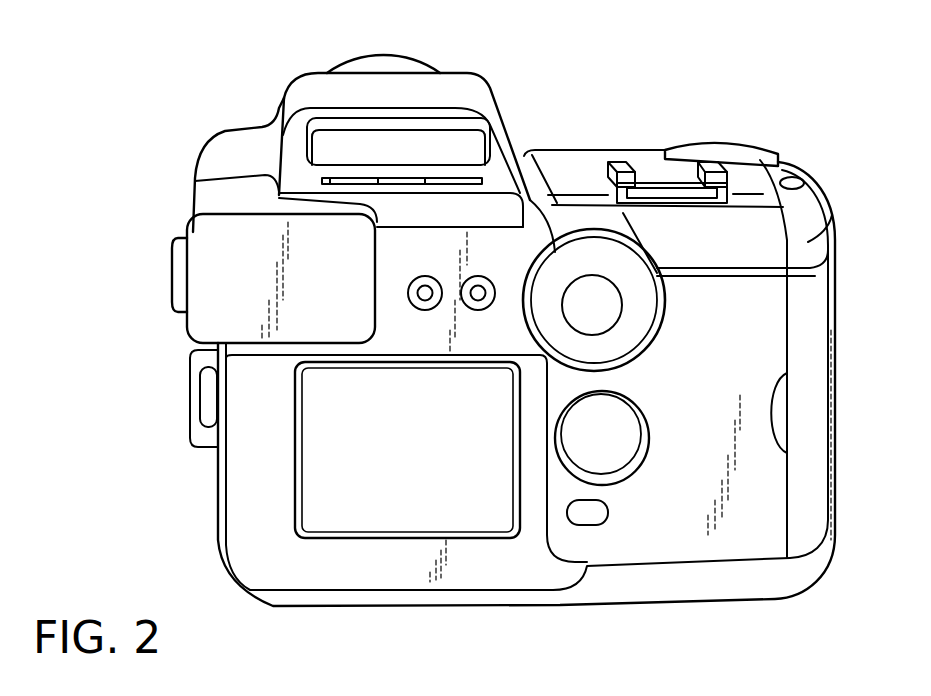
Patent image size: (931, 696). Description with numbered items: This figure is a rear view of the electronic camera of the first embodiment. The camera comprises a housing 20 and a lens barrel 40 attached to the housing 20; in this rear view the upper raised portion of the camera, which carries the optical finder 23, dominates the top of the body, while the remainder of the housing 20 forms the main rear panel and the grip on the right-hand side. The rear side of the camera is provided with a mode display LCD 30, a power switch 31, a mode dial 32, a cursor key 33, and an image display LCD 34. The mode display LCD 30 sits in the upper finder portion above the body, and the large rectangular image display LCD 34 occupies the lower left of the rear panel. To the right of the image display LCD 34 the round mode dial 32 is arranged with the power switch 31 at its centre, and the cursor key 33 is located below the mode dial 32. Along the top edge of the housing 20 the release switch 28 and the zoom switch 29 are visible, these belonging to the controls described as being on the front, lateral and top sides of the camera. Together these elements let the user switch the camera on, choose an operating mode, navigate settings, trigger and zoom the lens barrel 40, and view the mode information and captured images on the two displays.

The housing 20 is at (205, 507).
The optical finder 23 is at (200, 232).
The release switch 28 is at (728, 143).
The zoom switch 29 is at (662, 148).
The mode display LCD 30 is at (440, 137).
The power switch 31 is at (612, 304).
The mode dial 32 is at (627, 347).
The cursor key 33 is at (632, 445).
The image display LCD 34 is at (485, 522).
The lens barrel 40 is at (345, 55).